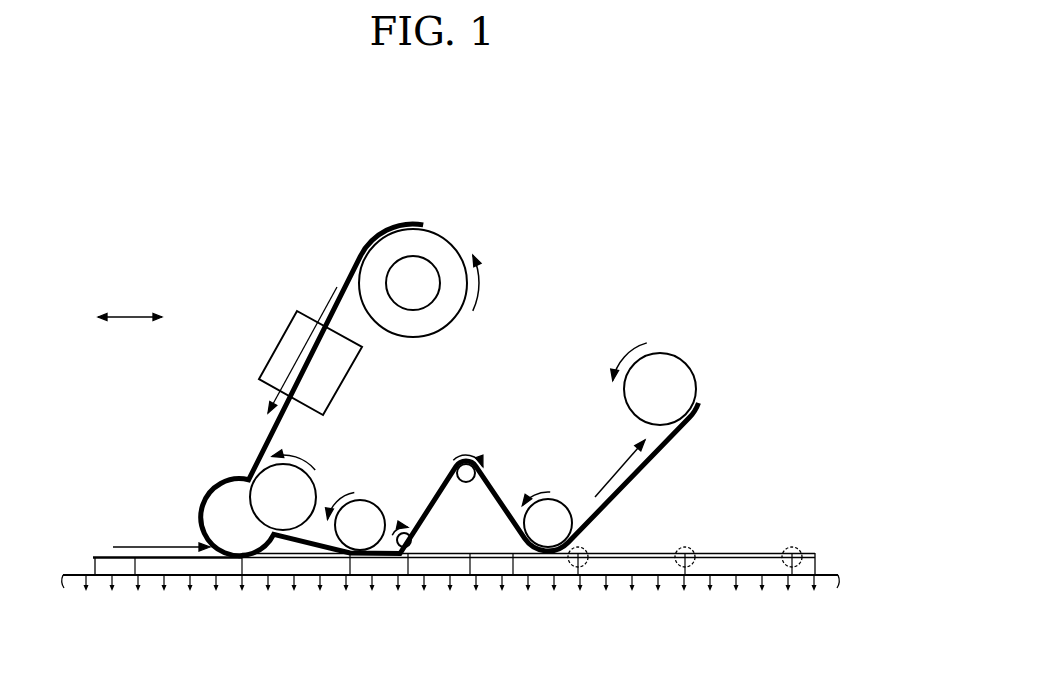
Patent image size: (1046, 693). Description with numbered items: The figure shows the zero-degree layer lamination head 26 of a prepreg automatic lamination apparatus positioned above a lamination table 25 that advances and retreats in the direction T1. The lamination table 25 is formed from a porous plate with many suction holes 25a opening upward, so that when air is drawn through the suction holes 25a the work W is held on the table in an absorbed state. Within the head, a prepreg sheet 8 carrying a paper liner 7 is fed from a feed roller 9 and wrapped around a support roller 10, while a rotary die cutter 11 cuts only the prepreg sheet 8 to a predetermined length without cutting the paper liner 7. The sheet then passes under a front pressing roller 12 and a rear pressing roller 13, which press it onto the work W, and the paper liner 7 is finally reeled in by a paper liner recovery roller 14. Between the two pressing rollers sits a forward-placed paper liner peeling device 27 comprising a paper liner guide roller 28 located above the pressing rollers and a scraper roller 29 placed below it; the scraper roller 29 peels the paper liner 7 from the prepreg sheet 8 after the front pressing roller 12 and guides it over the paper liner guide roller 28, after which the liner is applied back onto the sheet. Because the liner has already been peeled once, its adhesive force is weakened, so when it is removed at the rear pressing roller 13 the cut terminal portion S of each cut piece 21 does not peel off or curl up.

The paper liner 7 is at (483, 485).
The prepreg sheet 8 is at (347, 283).
The feed roller 9 is at (430, 263).
The support roller 10 is at (317, 487).
The rotary die cutter 11 is at (280, 338).
The front pressing roller 12 is at (380, 503).
The rear pressing roller 13 is at (553, 502).
The paper liner recovery roller 14 is at (693, 366).
The cut piece 21 is at (260, 422).
The lamination table 25 is at (441, 586).
The suction holes 25a is at (318, 578).
The 0-degree layer lamination head 26 is at (698, 195).
The forward-placed paper liner peeling device 27 is at (454, 436).
The paper liner guide roller 28 is at (468, 462).
The scraper roller 29 is at (414, 536).
The cut terminal portion S is at (587, 540).
The work W is at (815, 566).
The direction T1 is at (130, 304).